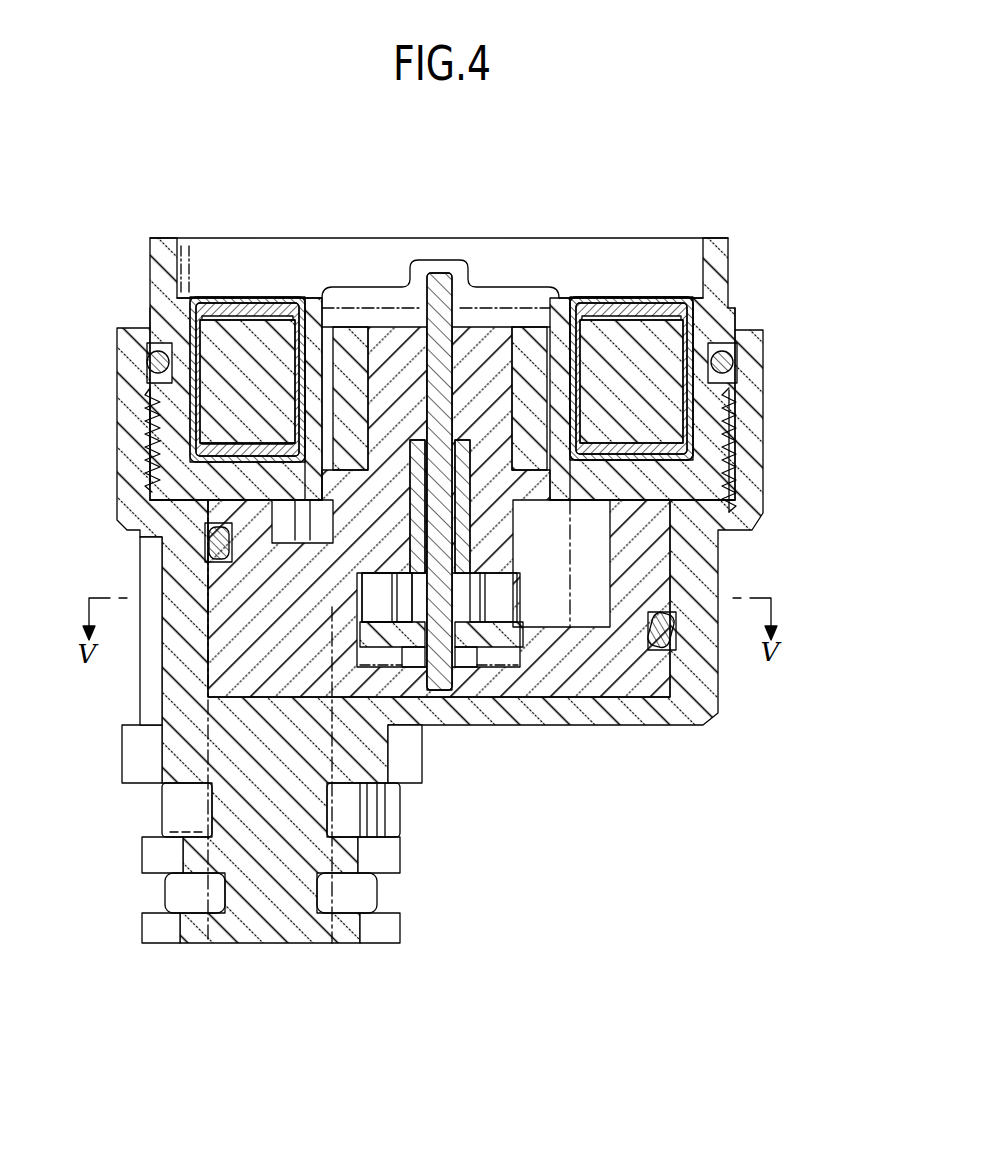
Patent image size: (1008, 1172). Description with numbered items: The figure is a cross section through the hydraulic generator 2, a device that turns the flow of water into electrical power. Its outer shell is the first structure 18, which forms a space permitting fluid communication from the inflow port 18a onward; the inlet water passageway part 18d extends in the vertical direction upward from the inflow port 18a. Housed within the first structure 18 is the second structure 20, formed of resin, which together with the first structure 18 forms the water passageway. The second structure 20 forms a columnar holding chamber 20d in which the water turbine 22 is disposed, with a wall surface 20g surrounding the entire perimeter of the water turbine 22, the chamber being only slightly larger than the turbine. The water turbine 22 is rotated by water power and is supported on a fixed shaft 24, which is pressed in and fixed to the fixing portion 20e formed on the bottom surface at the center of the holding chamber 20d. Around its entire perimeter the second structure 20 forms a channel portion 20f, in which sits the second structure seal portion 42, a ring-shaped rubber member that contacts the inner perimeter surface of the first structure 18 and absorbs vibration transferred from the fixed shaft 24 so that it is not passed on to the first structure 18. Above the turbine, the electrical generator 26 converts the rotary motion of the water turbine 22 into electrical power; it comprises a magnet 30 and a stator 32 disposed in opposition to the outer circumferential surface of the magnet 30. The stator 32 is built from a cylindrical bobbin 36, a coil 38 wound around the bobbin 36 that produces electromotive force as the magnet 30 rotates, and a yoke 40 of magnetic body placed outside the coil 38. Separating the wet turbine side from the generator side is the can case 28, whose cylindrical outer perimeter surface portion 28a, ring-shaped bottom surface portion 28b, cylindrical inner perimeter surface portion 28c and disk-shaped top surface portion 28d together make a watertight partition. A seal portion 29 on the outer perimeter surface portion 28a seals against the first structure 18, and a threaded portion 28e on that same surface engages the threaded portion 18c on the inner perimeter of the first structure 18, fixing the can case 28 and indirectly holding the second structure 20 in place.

The hydraulic generator 2 is at (809, 183).
The first structure 18 is at (700, 584).
The inflow port 18a is at (243, 946).
The threaded portion 18c is at (150, 451).
The inlet water passageway part 18d is at (345, 944).
The second structure 20 is at (573, 673).
The holding chamber 20d is at (362, 590).
The fixing portion 20e is at (470, 667).
The channel portion 20f is at (226, 548).
The wall surface 20g is at (240, 649).
The water turbine 22 is at (555, 556).
The fixed shaft 24 is at (449, 362).
The electrical generator 26 is at (508, 324).
The can case 28 is at (733, 443).
The outer perimeter surface portion 28a is at (150, 413).
The bottom surface portion 28b is at (234, 483).
The inner perimeter surface portion 28c is at (308, 330).
The top surface portion 28d is at (368, 293).
The threaded portion 28e is at (150, 490).
The seal portion 29 is at (150, 362).
The magnet 30 is at (347, 357).
The stator 32 is at (705, 291).
The bobbin 36 is at (641, 290).
The coil 38 is at (640, 397).
The yoke 40 is at (692, 325).
The second structure seal portion 42 is at (209, 540).